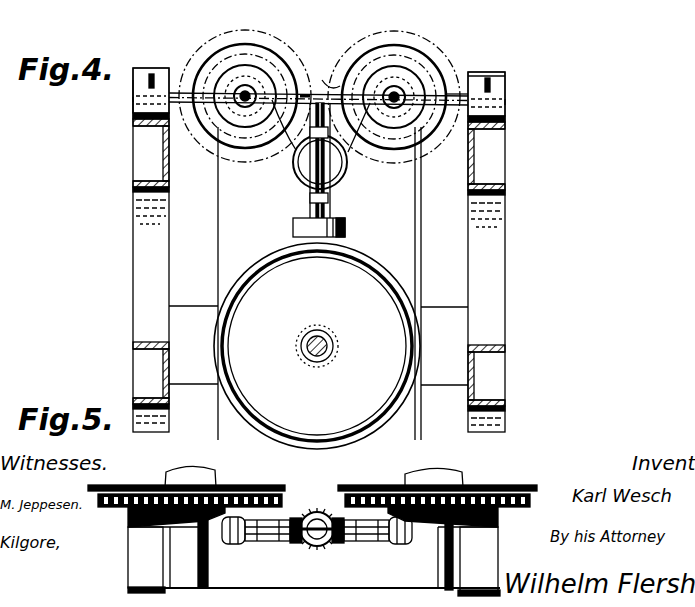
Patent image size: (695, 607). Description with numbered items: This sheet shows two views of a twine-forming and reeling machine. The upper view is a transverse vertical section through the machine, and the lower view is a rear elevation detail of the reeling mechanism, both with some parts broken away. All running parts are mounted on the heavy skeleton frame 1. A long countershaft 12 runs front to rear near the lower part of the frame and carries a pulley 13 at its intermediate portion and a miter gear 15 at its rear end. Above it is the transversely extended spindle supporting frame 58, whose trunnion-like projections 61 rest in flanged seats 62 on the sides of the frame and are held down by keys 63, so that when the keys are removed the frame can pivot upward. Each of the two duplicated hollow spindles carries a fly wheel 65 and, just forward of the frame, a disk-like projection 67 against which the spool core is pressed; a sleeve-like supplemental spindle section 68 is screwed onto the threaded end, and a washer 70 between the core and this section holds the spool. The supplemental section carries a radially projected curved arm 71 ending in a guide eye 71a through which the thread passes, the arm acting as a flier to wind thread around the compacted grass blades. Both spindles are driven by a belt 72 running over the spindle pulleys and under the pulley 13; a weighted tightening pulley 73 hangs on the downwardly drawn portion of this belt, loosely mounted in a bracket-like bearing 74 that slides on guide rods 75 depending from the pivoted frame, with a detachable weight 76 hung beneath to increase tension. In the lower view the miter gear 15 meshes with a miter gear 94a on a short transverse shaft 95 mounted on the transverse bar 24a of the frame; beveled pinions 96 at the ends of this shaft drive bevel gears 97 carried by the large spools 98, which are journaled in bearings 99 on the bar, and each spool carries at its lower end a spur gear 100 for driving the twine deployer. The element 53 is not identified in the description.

In FIG. 4, the skeleton frame 1 is at (143, 247).
In FIG. 5, the skeleton frame 1 is at (124, 592).
In FIG. 4, the long countershaft 12 is at (335, 345).
In FIG. 4, the pulley 13 is at (236, 399).
In FIG. 4, the bearing 53 is at (493, 75).
In FIG. 4, the spindle supporting frame 58 is at (456, 82).
In FIG. 4, the trunnion-like projections 61 is at (133, 101).
In FIG. 4, the flanged seats 62 is at (158, 70).
In FIG. 4, the keys 63 is at (163, 74).
In FIG. 4, the fly wheel 65 is at (295, 68).
In FIG. 4, the disk-like projection 67 is at (250, 128).
In FIG. 4, the supplemental spindle section 68 is at (251, 90).
In FIG. 4, the washer 70 is at (218, 134).
In FIG. 4, the curved arm 71 is at (212, 64).
In FIG. 4, the guide eye 71a is at (334, 74).
In FIG. 4, the belt 72 is at (318, 283).
In FIG. 4, the weighted tightening pulley 73 is at (346, 176).
In FIG. 4, the bracket-like bearing 74 is at (310, 199).
In FIG. 4, the guide rods 75 is at (326, 213).
In FIG. 4, the detachable weight 76 is at (347, 232).
In FIG. 5, the miter gear 15 is at (306, 543).
In FIG. 5, the rack bar 24a is at (135, 552).
In FIG. 5, the miter gear 94a is at (298, 515).
In FIG. 5, the short transverse shaft 95 is at (329, 547).
In FIG. 5, the beveled pinions 96 is at (229, 546).
In FIG. 5, the bevel gears 97 is at (157, 522).
In FIG. 5, the spools 98 is at (217, 478).
In FIG. 5, the bearings 99 is at (468, 562).
In FIG. 5, the spur gear 100 is at (116, 506).